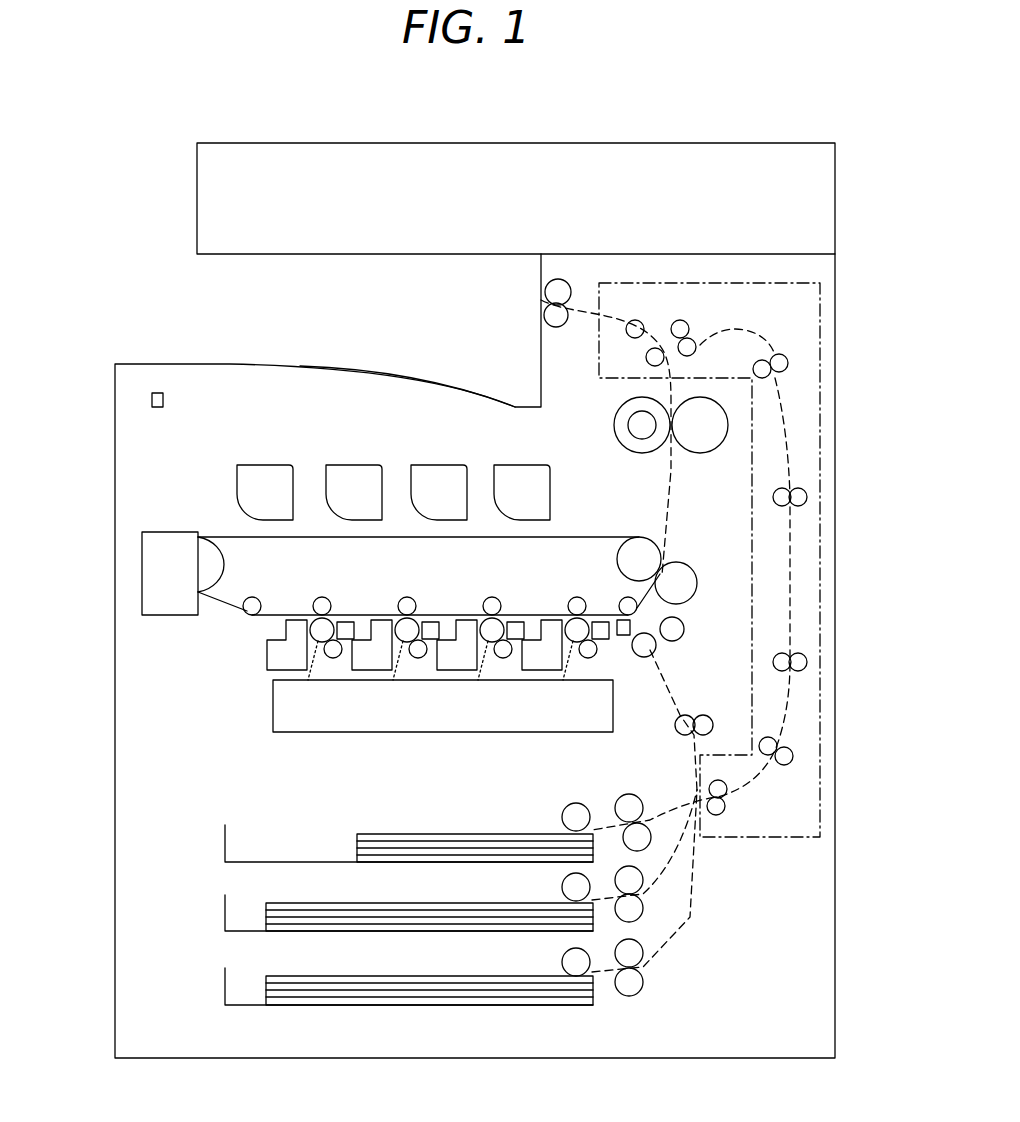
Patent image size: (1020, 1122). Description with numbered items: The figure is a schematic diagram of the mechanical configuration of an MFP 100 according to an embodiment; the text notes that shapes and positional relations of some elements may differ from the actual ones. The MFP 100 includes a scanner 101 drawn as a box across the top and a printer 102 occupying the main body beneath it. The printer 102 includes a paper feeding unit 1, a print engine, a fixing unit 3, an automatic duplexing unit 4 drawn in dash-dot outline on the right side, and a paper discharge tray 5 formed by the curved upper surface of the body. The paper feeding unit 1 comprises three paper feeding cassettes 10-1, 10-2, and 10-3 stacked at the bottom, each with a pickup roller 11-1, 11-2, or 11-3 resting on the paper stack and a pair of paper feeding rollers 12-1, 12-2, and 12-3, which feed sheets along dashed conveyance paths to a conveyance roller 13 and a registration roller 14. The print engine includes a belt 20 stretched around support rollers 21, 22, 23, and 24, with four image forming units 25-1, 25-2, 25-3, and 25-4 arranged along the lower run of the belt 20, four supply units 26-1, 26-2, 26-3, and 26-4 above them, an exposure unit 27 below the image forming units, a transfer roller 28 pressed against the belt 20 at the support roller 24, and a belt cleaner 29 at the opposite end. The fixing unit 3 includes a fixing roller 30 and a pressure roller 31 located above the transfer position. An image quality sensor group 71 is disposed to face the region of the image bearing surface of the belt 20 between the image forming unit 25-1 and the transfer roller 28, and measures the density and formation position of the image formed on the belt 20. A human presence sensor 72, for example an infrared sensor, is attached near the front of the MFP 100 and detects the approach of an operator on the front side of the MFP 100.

The MFP 100 is at (727, 114).
The scanner 101 is at (197, 203).
The printer 102 is at (115, 397).
The paper feeding unit 1 is at (276, 812).
The fixing unit 3 is at (608, 405).
The automatic duplexing unit (ADU) 4 is at (820, 337).
The paper discharge tray 5 is at (421, 383).
The paper feeding cassette 10-1 is at (225, 845).
The paper feeding cassette 10-2 is at (225, 915).
The paper feeding cassette 10-3 is at (225, 990).
The pickup roller 11-1 is at (562, 819).
The pickup roller 11-2 is at (562, 889).
The pickup roller 11-3 is at (562, 964).
The paper feeding roller 12-1 is at (640, 822).
The paper feeding roller 12-2 is at (645, 892).
The paper feeding roller 12-3 is at (645, 960).
The conveyance roller 13 is at (694, 715).
The registration roller 14 is at (660, 642).
The belt 20 is at (567, 537).
The support roller 21 is at (210, 545).
The support roller 22 is at (247, 612).
The support roller 23 is at (640, 600).
The support roller 24 is at (633, 548).
The image forming unit 25-1 is at (568, 598).
The image forming unit 25-2 is at (483, 598).
The image forming unit 25-3 is at (398, 598).
The image forming unit 25-4 is at (313, 598).
The supply unit 26-1 is at (514, 465).
The supply unit 26-2 is at (431, 465).
The supply unit 26-3 is at (346, 465).
The supply unit 26-4 is at (257, 465).
The exposure unit 27 is at (273, 712).
The transfer roller 28 is at (688, 580).
The belt cleaner 29 is at (172, 616).
The fixing roller 30 is at (648, 446).
The pressure roller 31 is at (708, 446).
The image quality sensor group 71 is at (623, 636).
The human presence sensor 72 is at (157, 407).